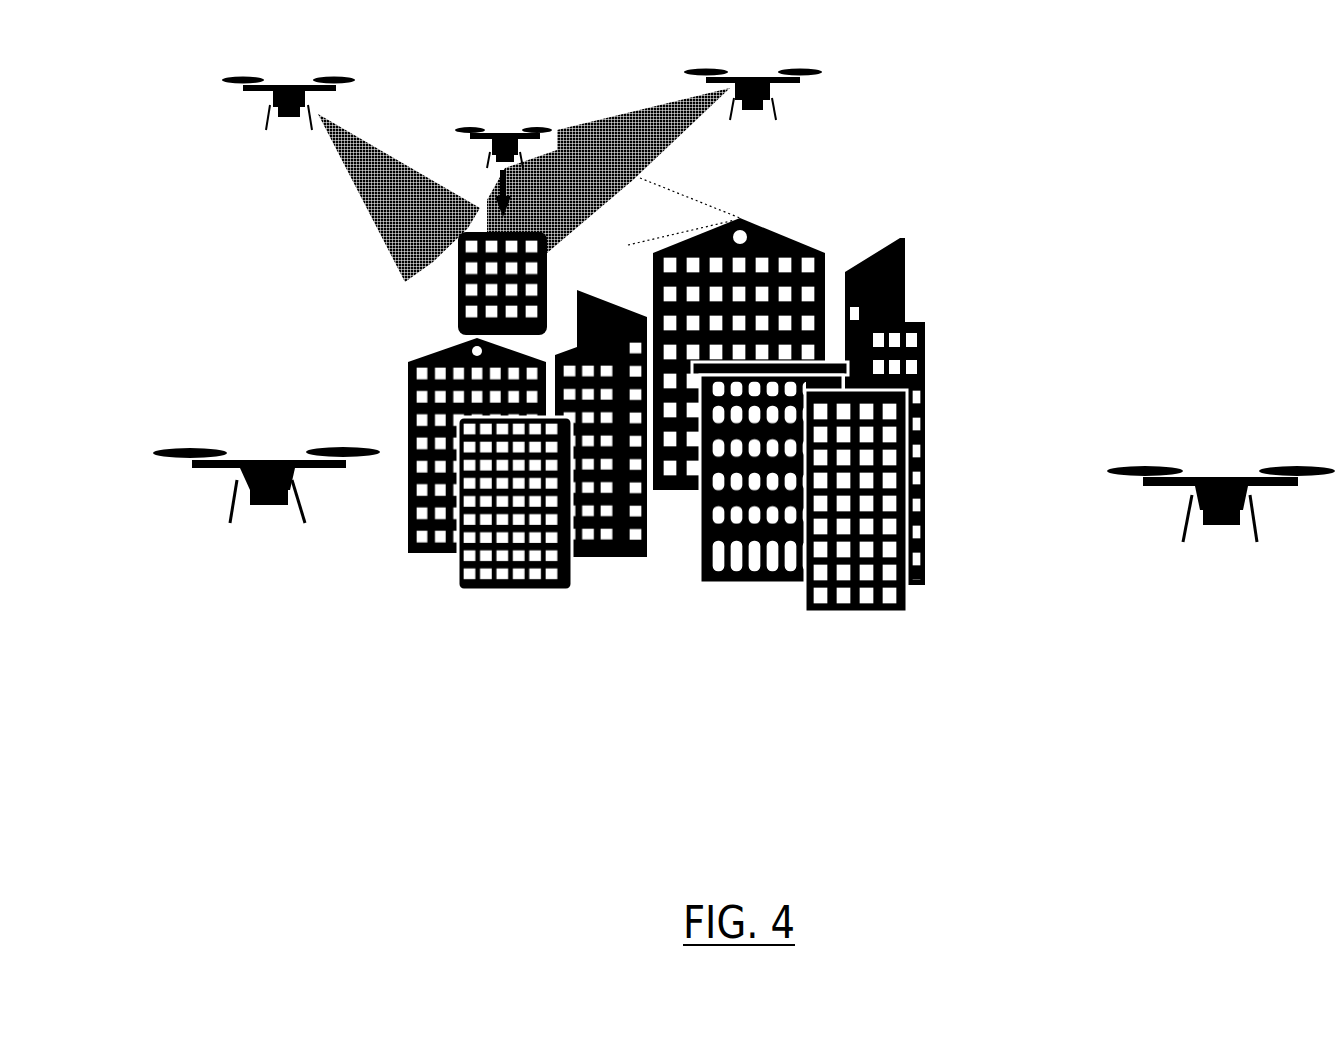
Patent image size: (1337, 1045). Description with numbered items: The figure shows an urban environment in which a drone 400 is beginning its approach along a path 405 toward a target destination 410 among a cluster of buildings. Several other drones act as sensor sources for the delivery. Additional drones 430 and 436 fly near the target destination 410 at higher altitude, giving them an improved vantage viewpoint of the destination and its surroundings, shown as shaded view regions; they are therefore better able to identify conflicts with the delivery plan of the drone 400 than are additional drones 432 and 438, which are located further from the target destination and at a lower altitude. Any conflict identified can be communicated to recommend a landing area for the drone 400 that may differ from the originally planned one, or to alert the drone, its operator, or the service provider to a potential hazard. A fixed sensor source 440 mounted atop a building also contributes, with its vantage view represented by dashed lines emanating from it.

The drone 400 is at (549, 98).
The path 405 is at (578, 178).
The target destination 410 is at (552, 264).
The additional drone 430 is at (232, 81).
The additional drone 432 is at (241, 455).
The additional drone 436 is at (789, 103).
The additional drone 438 is at (1221, 479).
The sensor source 440 is at (756, 329).